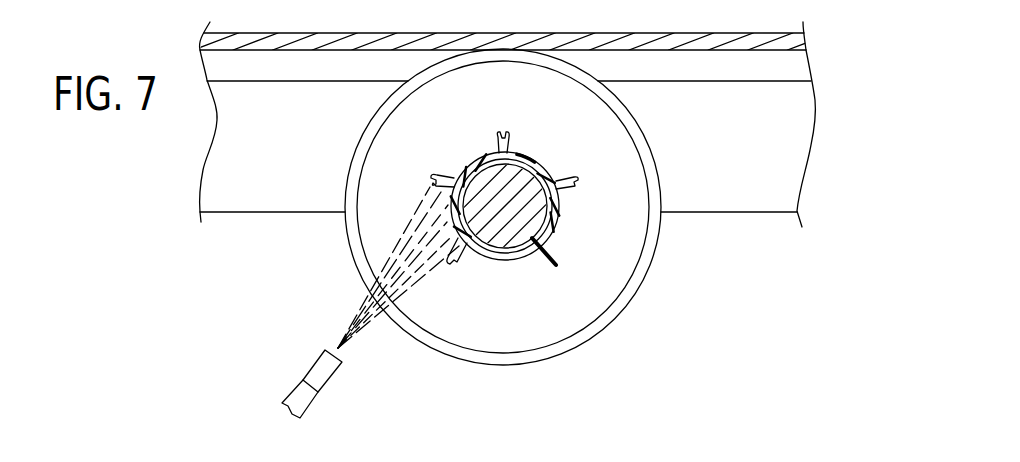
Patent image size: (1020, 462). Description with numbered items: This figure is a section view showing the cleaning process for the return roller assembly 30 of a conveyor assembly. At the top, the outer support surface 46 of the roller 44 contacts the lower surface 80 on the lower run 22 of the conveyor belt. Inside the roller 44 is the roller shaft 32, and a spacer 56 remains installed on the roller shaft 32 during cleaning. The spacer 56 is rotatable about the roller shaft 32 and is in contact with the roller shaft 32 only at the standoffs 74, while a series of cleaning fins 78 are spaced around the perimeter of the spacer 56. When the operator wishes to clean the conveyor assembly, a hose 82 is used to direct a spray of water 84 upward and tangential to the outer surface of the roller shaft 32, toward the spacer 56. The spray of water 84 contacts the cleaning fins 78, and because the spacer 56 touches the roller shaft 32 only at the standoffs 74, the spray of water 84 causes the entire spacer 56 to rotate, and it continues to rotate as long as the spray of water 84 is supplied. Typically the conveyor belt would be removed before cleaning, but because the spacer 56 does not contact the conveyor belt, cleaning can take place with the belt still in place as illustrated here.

The lower run 22 is at (707, 38).
The lower surface 80 is at (707, 50).
The return roller assembly 30 is at (662, 331).
The outer support surface 46 is at (655, 160).
The roller 44 is at (635, 255).
The roller shaft 32 is at (503, 248).
The spacer 56 is at (537, 160).
The cleaning fins 78 is at (508, 135).
The standoffs 74 is at (550, 250).
The hose 82 is at (296, 389).
The spray of water 84 is at (355, 338).